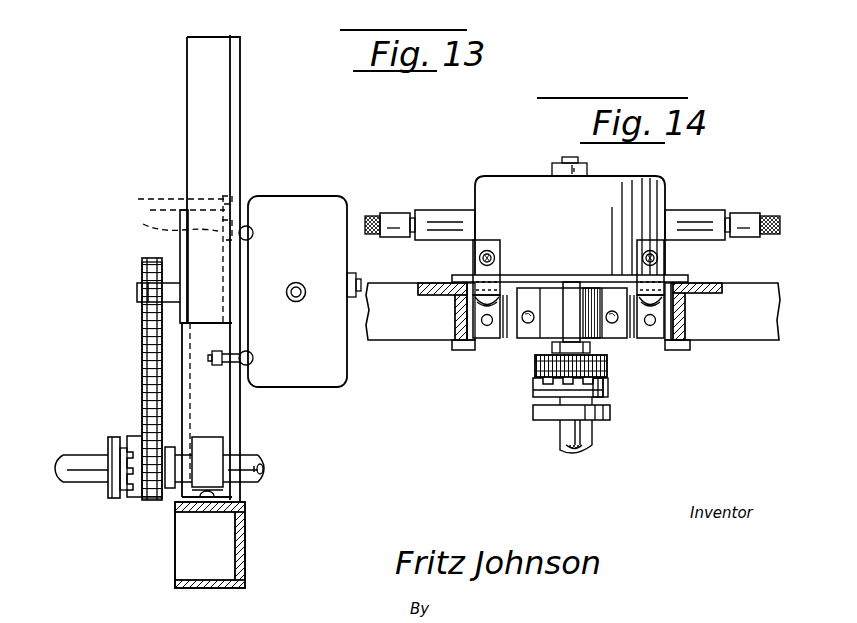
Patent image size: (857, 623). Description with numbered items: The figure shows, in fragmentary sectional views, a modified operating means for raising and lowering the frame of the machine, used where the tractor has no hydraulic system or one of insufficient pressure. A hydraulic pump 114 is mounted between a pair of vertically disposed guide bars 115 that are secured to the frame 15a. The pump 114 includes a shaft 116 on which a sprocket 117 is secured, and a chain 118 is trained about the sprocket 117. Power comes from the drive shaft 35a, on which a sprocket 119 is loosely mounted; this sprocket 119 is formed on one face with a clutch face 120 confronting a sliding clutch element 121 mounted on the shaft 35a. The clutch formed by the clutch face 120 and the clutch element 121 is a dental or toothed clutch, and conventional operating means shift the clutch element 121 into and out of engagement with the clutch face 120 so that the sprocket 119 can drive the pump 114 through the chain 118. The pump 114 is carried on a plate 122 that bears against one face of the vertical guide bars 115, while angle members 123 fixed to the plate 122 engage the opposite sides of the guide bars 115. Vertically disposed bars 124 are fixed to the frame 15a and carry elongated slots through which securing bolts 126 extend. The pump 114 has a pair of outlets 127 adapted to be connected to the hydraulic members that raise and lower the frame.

In FIG. 13, the frame 15a is at (243, 547).
In FIG. 14, the frame 15a is at (383, 330).
In FIG. 13, the drive shaft 35a is at (63, 485).
In FIG. 14, the drive shaft 35a is at (560, 440).
In FIG. 13, the hydraulic pump 114 is at (297, 208).
In FIG. 14, the hydraulic pump 114 is at (503, 185).
In FIG. 13, the guide bars 115 is at (240, 117).
In FIG. 14, the guide bars 115 is at (462, 313).
In FIG. 13, the shaft 116 is at (137, 290).
In FIG. 14, the shaft 116 is at (568, 298).
In FIG. 14, the sprocket 117 is at (547, 365).
In FIG. 13, the chain 118 is at (147, 372).
In FIG. 13, the sprocket 119 is at (155, 507).
In FIG. 13, the clutch face 120 is at (140, 438).
In FIG. 14, the clutch face 120 is at (608, 383).
In FIG. 13, the sliding clutch element 121 is at (115, 507).
In FIG. 14, the sliding clutch element 121 is at (610, 393).
In FIG. 13, the plate 122 is at (247, 325).
In FIG. 14, the plate 122 is at (688, 267).
In FIG. 13, the angle members 123 is at (180, 242).
In FIG. 14, the angle members 123 is at (682, 348).
In FIG. 13, the vertically disposed bars 124 is at (157, 198).
In FIG. 13, the securing bolts 126 is at (160, 225).
In FIG. 13, the outlets 127 is at (300, 283).
In FIG. 14, the outlets 127 is at (697, 213).